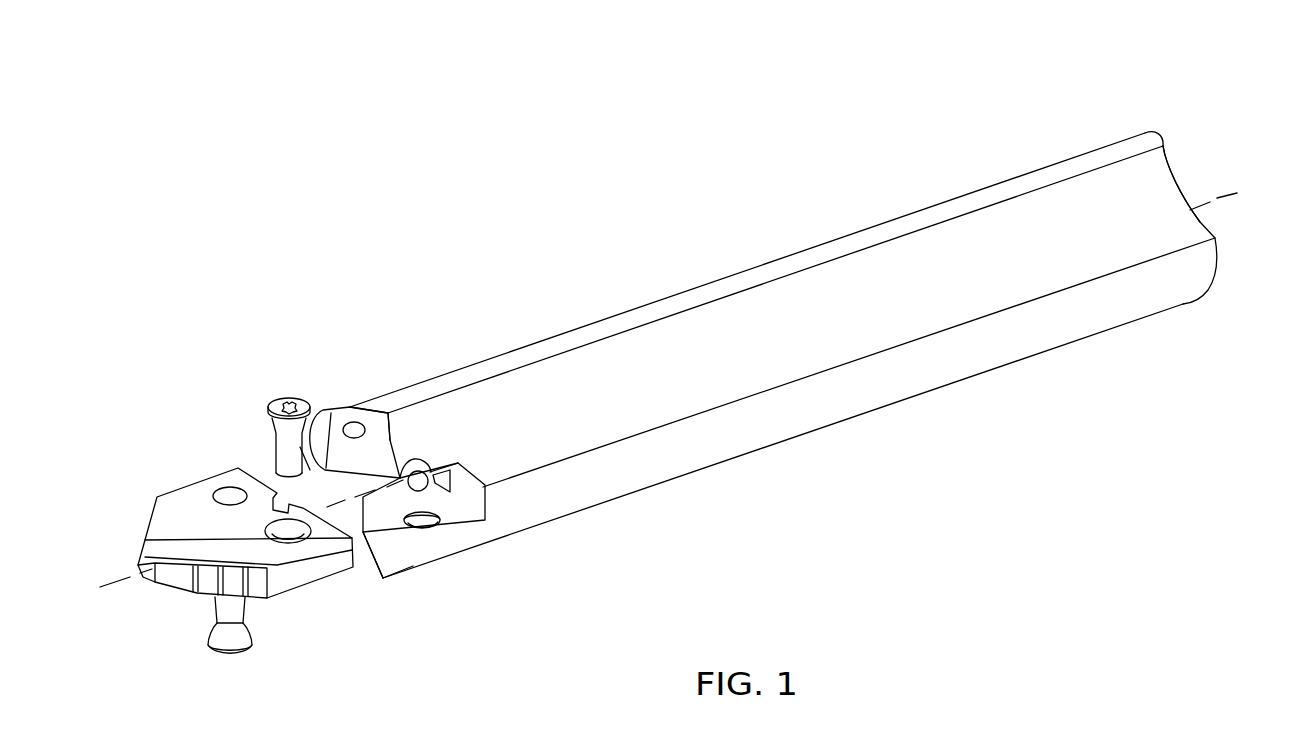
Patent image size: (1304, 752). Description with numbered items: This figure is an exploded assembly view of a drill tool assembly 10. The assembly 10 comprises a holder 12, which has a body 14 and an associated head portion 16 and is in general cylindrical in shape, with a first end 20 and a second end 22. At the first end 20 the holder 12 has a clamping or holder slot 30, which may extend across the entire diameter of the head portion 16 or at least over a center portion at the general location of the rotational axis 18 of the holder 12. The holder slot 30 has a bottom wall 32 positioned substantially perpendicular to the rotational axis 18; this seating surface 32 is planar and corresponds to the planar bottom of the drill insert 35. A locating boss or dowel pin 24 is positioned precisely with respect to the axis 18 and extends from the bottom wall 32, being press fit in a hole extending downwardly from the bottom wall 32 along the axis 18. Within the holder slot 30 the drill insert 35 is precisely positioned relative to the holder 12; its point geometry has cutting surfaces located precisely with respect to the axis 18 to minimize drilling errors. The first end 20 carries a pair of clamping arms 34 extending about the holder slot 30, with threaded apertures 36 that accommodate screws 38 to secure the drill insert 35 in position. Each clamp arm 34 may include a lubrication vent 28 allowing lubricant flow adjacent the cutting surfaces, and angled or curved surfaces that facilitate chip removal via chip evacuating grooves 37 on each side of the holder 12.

The drill tool assembly 10 is at (437, 211).
The holder 12 is at (815, 428).
The body 14 is at (935, 202).
The head portion 16 is at (415, 401).
The rotational axis 18 is at (1217, 200).
The first end 20 is at (330, 410).
The second end 22 is at (1179, 187).
The locating boss or dowel pin 24 is at (433, 487).
The lubrication vent 28 is at (350, 426).
The holder slot 30 is at (360, 488).
The bottom wall 32 is at (445, 490).
The clamping arms 34 is at (400, 531).
The drill insert 35 is at (185, 492).
The apertures 36 is at (424, 521).
The chip evacuating grooves 37 is at (826, 292).
The screws 38 is at (272, 400).